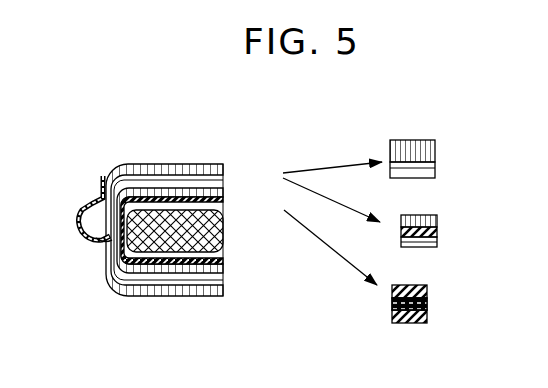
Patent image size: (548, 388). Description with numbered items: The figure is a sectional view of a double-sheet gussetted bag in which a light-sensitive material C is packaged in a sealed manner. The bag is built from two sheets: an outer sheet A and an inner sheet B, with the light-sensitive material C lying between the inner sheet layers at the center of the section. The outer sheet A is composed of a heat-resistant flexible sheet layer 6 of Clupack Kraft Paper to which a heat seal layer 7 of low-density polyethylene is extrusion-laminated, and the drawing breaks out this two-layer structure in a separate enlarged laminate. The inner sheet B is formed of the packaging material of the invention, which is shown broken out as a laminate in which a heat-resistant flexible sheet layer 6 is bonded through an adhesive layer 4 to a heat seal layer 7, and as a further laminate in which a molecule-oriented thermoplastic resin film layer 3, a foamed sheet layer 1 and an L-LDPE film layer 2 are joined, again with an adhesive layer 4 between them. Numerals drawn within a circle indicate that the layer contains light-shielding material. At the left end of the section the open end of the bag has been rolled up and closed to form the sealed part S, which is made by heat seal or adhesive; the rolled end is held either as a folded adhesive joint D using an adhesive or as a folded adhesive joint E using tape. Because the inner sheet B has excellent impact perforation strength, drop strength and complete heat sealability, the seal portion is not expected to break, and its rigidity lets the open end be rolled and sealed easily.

The foamed sheet layer 1 is at (428, 312).
The L-LDPE film layer 2 is at (427, 323).
The molecule-oriented thermoplastic resin film layer 3 is at (428, 288).
The adhesive layer 4 is at (438, 230).
The heat-resistant flexible sheet layer 6 is at (434, 150).
The heat seal layer 7 is at (432, 175).
The outer sheet A is at (232, 165).
The inner sheet B is at (232, 188).
The light-sensitive material C is at (216, 240).
The folded adhesive joint of sealed part D is at (70, 201).
The folded adhesive joint of sealed part E is at (95, 206).
The sealed part S is at (92, 245).